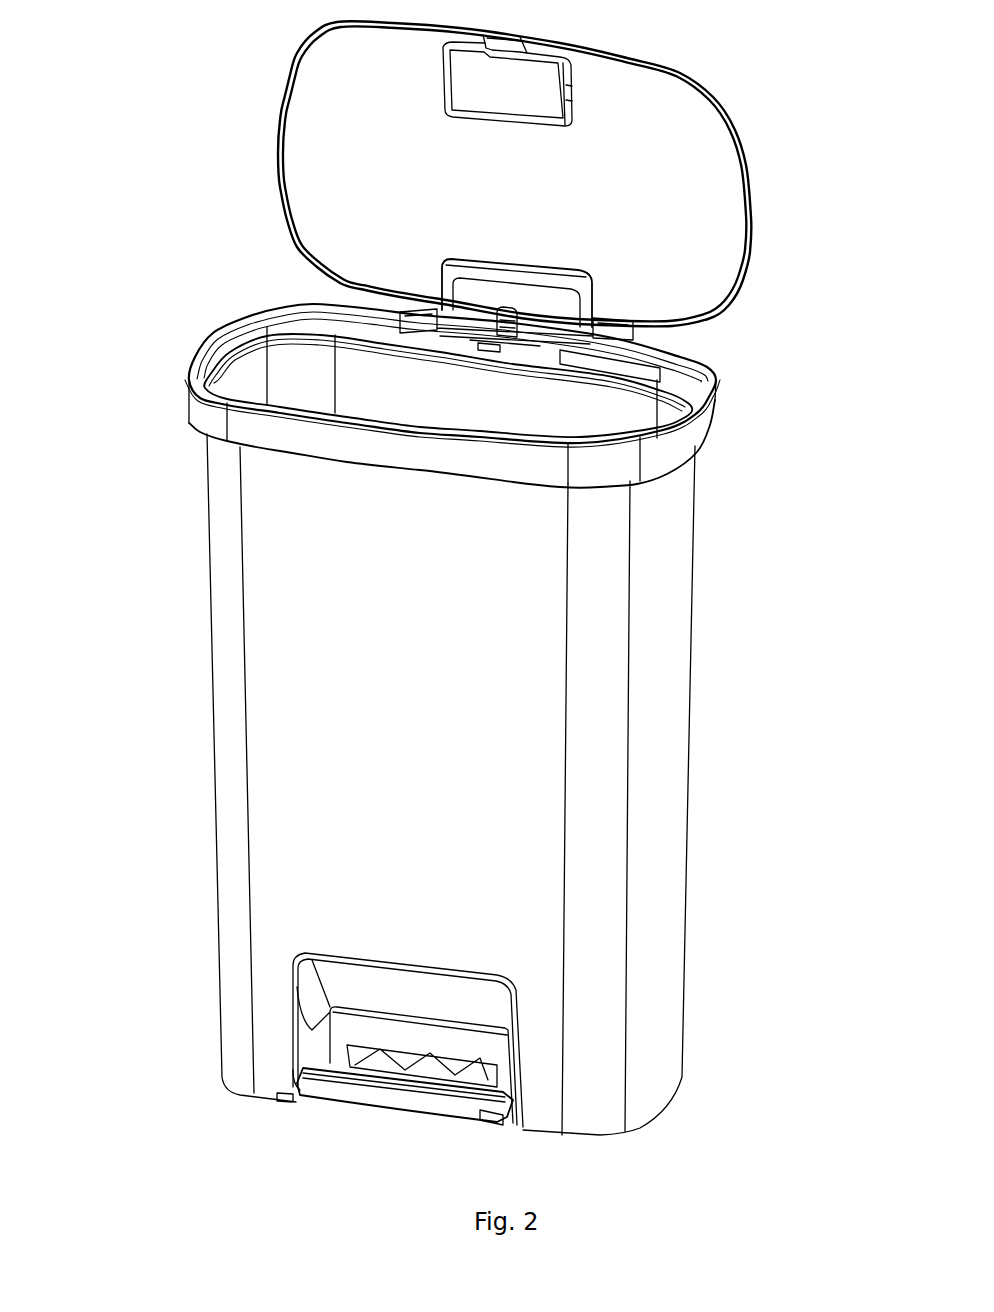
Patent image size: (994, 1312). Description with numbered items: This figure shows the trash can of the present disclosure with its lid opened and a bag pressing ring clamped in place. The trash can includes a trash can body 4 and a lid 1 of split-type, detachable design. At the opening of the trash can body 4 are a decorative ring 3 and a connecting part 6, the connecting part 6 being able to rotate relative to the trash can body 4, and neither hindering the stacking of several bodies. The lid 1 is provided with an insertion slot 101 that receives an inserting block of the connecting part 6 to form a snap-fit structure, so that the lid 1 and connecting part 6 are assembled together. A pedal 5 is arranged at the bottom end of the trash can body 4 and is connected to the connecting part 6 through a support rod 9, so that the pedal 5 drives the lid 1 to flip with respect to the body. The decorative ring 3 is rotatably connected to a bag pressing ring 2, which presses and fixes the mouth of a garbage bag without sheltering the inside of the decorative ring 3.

The lid 1 is at (303, 175).
The insertion slot 101 is at (578, 298).
The bag pressing ring 2 is at (260, 345).
The decorative ring 3 is at (212, 422).
The trash can body 4 is at (260, 655).
The pedal 5 is at (323, 1078).
The connecting part 6 is at (553, 317).
The support rod 9 is at (545, 355).